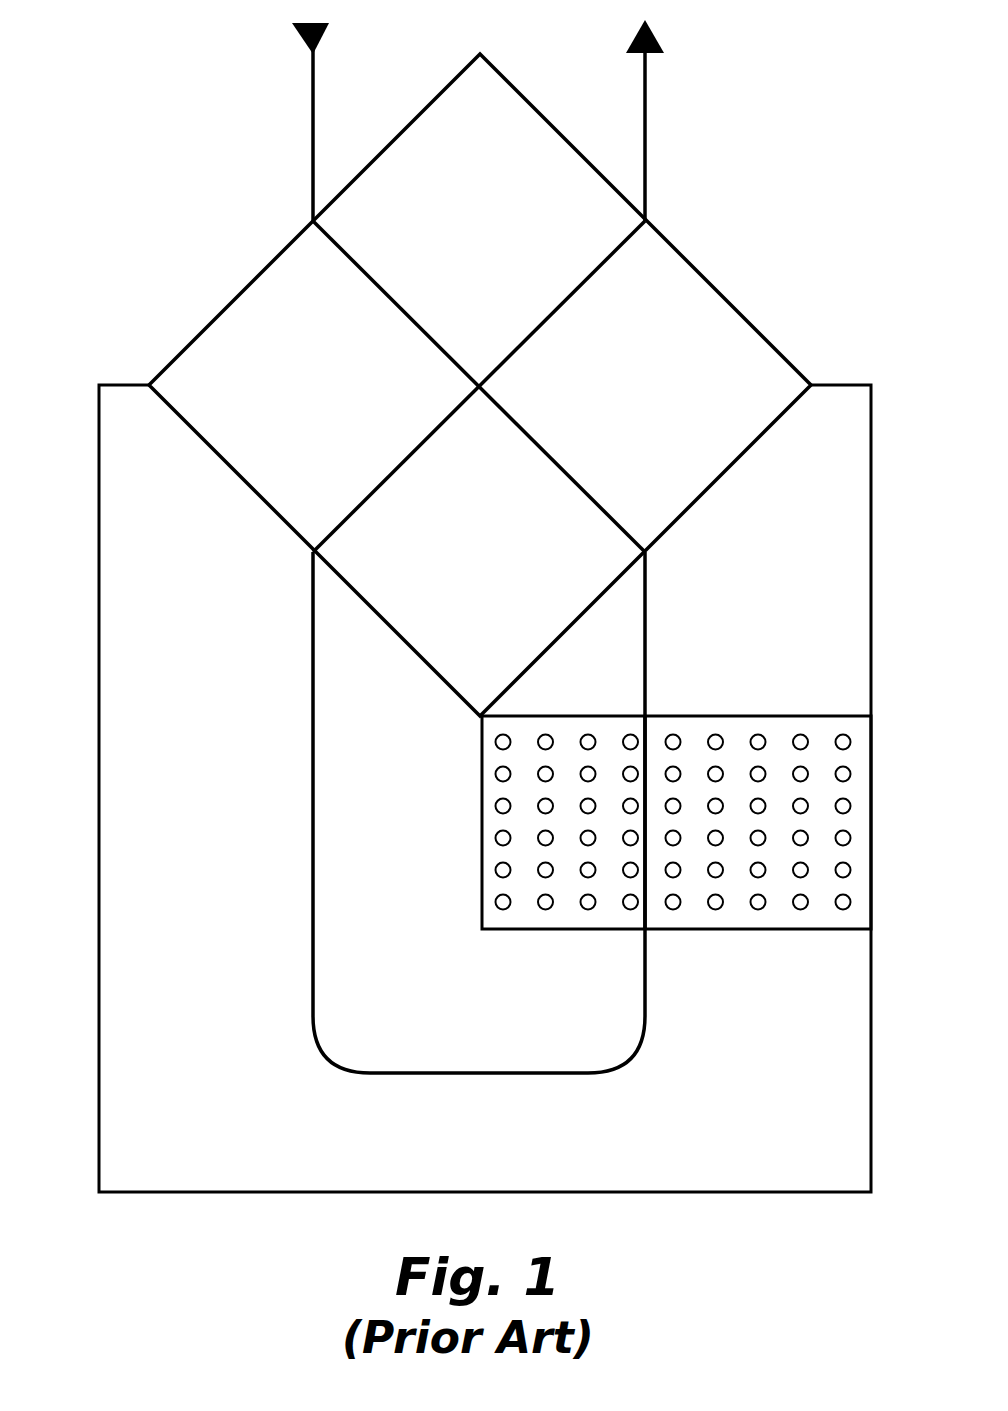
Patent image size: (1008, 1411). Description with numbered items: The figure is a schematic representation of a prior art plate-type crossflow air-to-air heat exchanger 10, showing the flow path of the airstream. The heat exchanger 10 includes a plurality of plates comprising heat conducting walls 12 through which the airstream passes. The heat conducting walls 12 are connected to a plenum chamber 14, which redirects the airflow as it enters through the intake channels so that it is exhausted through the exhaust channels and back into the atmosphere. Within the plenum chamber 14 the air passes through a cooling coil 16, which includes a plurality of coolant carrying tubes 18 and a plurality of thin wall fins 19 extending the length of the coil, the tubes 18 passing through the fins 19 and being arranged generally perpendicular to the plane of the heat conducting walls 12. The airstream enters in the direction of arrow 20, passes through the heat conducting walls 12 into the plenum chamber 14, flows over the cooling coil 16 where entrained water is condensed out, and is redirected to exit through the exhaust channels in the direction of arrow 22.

The heat exchanger 10 is at (158, 195).
The heat conducting walls 12 is at (184, 348).
The plenum chamber 14 is at (99, 850).
The cooling coil 16 is at (890, 724).
The tubes 18 is at (851, 803).
The thin wall fins 19 is at (857, 880).
The arrow 20 is at (312, 60).
The arrow 22 is at (650, 58).